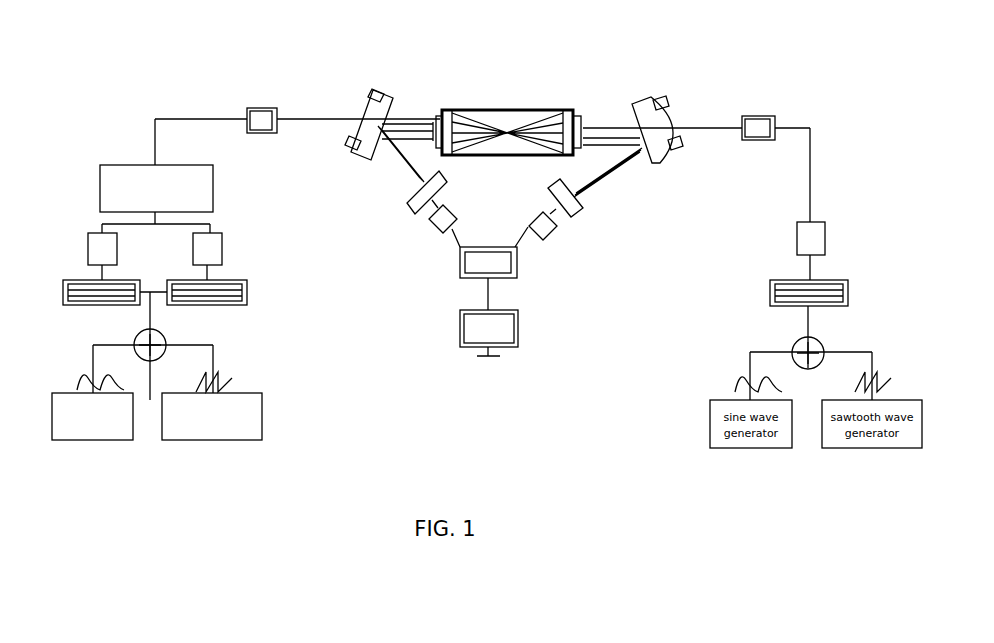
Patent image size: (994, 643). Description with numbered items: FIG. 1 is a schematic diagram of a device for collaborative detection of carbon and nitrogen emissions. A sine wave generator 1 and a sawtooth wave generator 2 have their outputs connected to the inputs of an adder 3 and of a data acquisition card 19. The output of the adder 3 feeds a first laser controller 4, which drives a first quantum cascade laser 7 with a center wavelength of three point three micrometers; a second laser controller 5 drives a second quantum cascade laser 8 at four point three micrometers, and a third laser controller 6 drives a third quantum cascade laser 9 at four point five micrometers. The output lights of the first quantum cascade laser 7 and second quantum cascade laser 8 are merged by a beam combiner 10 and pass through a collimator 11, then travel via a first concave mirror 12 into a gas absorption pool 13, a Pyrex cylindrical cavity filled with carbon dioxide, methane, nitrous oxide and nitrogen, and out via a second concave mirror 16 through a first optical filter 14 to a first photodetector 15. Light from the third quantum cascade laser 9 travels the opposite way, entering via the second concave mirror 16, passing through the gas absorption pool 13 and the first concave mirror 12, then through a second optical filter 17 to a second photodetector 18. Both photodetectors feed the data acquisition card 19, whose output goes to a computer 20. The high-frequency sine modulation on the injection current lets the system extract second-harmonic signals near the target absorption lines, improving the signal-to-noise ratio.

The sine wave generator 1 is at (93, 440).
The sawtooth wave generator 2 is at (212, 440).
The adder 3 is at (150, 440).
The first laser controller 4 is at (63, 305).
The second laser controller 5 is at (247, 305).
The third laser controller 6 is at (849, 280).
The first quantum cascade laser 7 is at (88, 233).
The second quantum cascade laser 8 is at (213, 233).
The third quantum cascade laser 9 is at (812, 222).
The beam combiner 10 is at (155, 165).
The collimator 11 is at (260, 108).
The first concave mirror 12 is at (373, 118).
The gas absorption pool 13 is at (490, 110).
The first optical filter 14 is at (424, 183).
The first photodetector 15 is at (458, 216).
The second concave mirror 16 is at (545, 208).
The second optical filter 17 is at (562, 180).
The second photodetector 18 is at (666, 105).
The data acquisition card 19 is at (460, 278).
The computer 20 is at (488, 356).